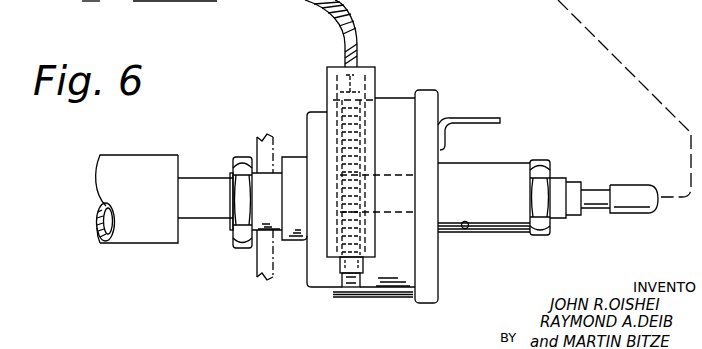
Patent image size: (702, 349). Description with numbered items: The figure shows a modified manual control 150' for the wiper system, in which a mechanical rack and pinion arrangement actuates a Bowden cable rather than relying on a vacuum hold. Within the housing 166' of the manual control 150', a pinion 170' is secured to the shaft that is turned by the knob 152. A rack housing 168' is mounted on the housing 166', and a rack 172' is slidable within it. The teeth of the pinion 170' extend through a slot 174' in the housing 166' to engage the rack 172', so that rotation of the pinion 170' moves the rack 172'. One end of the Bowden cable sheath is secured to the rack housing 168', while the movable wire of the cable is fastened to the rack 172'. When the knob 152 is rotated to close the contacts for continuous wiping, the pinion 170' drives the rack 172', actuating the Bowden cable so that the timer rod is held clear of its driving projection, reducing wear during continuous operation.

The knob 152 is at (137, 163).
The manual control 150' is at (230, 181).
The housing 166' is at (437, 174).
The rack housing 168' is at (358, 33).
The pinion 170' is at (382, 303).
The rack 172' is at (345, 312).
The slot 174' is at (347, 310).